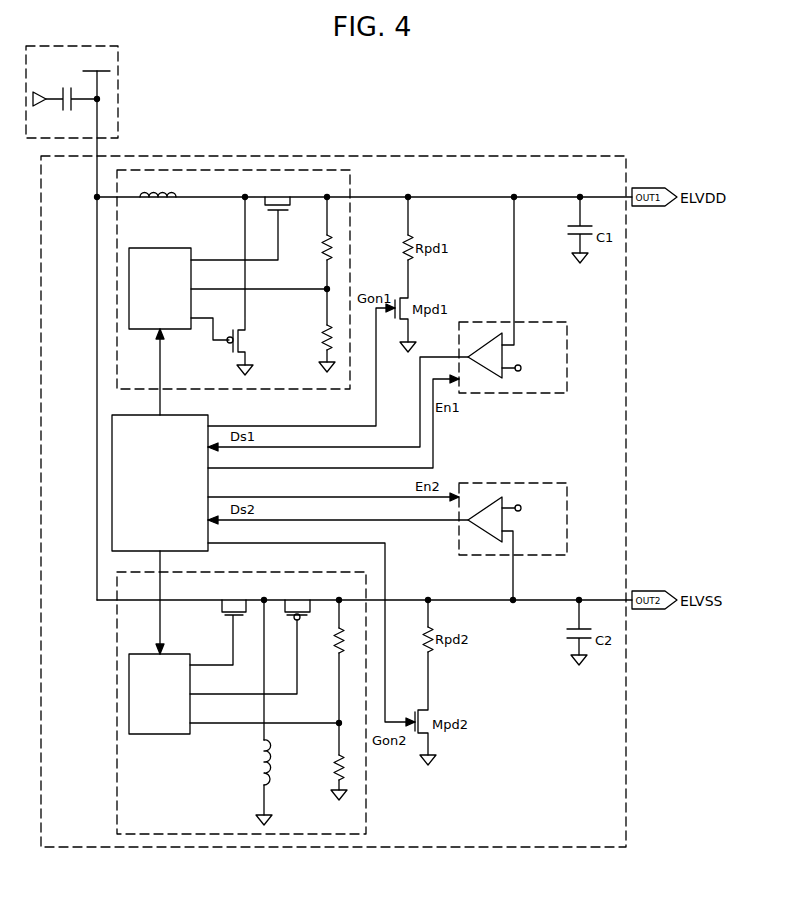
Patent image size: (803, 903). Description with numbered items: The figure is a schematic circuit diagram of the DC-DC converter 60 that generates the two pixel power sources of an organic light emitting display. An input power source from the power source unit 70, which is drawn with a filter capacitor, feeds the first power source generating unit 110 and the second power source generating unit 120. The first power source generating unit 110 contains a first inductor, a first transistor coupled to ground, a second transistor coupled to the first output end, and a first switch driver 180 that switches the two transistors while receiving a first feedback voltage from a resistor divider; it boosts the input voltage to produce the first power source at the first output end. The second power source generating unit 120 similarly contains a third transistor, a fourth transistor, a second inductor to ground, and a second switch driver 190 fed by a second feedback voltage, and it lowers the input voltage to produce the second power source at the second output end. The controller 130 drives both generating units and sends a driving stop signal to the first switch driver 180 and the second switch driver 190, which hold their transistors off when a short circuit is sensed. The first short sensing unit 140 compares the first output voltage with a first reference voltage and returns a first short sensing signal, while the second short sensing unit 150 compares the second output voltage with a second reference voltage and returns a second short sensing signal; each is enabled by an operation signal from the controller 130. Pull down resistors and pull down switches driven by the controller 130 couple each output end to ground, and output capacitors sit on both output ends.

The power source unit 70 is at (120, 93).
The DC-DC converter 60 is at (474, 156).
The first power source generating unit 110 is at (117, 279).
The first switch driver 180 is at (183, 248).
The controller 130 is at (112, 484).
The first short sensing unit 140 is at (567, 357).
The second short sensing unit 150 is at (567, 522).
The second power source generating unit 120 is at (117, 700).
The second switch driver 190 is at (172, 734).